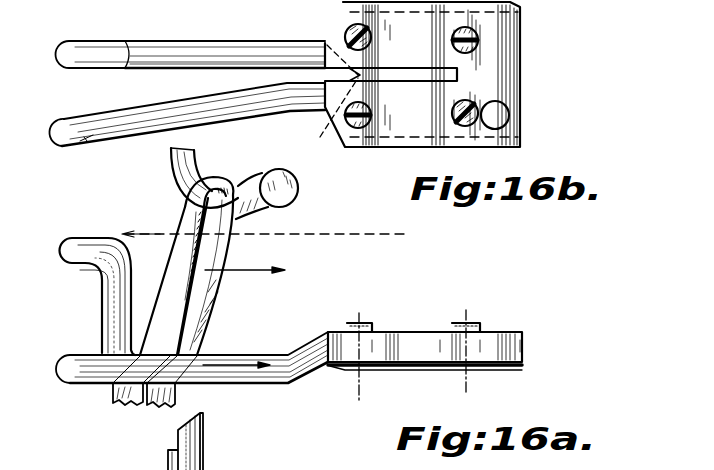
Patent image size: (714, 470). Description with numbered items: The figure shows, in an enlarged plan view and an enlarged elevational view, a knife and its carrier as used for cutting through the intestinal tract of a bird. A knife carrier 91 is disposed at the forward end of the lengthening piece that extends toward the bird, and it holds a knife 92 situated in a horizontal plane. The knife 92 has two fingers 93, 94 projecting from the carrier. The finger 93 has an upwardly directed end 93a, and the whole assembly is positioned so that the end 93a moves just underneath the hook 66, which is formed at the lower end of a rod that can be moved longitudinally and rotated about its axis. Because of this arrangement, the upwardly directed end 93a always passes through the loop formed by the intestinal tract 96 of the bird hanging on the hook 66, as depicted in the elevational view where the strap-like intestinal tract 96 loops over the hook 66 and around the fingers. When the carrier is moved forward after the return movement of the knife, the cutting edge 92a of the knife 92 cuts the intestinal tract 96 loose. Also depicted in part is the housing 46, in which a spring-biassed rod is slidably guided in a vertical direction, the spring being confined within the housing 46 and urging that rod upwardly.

In FIG. 16B, the knife carrier 91 is at (515, 78).
In FIG. 16B, the knife 92 is at (396, 75).
In FIG. 16A, the knife 92 is at (408, 368).
In FIG. 16B, the cutting edge 92a is at (321, 101).
In FIG. 16B, the finger 93 is at (171, 48).
In FIG. 16A, the upwardly directed end 93a is at (112, 304).
In FIG. 16B, the finger 94 is at (72, 141).
In FIG. 16A, the finger 94 is at (74, 385).
In FIG. 16A, the intestinal tract 96 is at (210, 306).
In FIG. 16A, the hook 66 is at (298, 190).
In FIG. 16A, the housing 46 is at (204, 452).